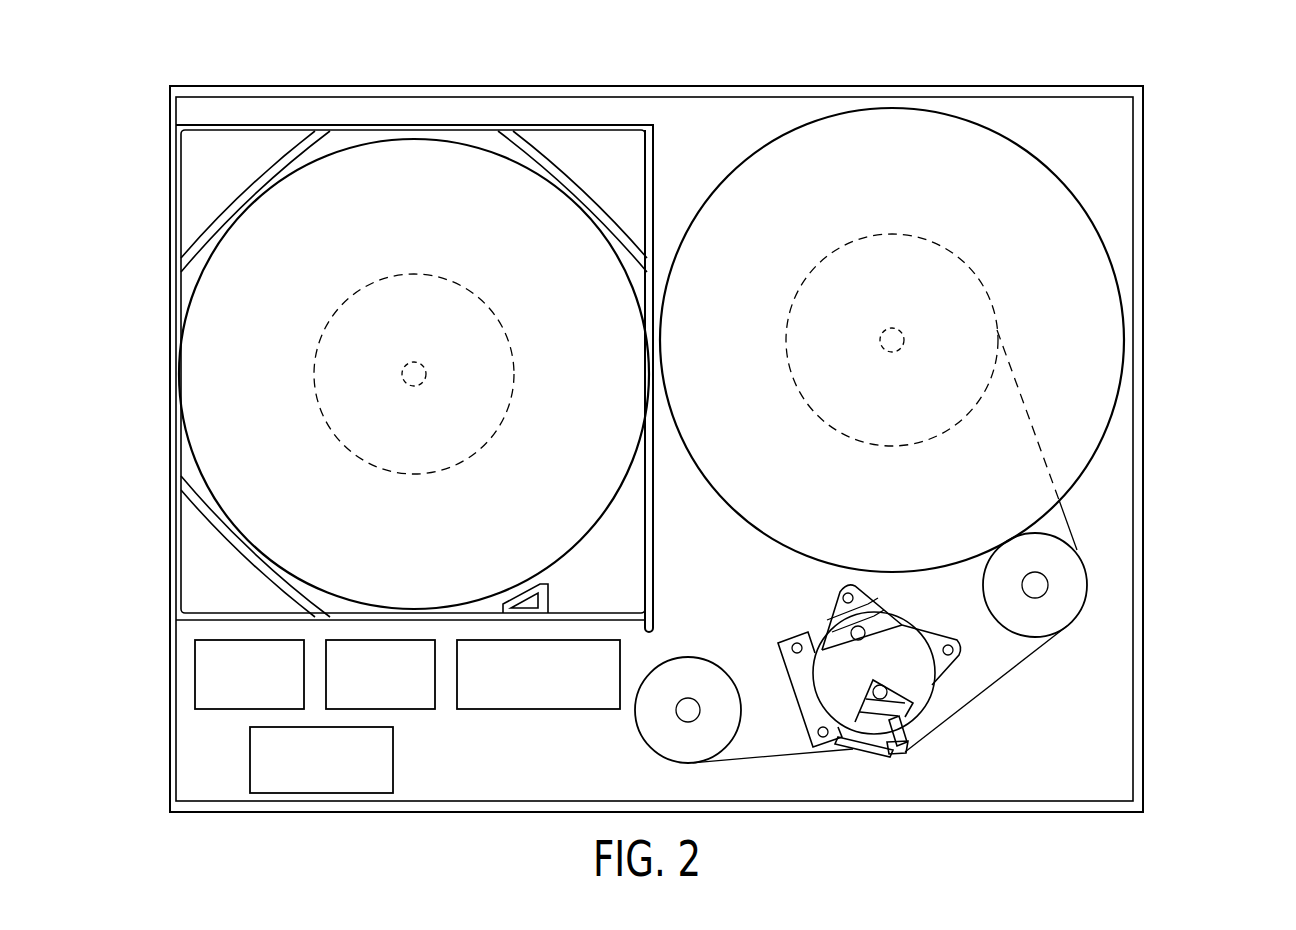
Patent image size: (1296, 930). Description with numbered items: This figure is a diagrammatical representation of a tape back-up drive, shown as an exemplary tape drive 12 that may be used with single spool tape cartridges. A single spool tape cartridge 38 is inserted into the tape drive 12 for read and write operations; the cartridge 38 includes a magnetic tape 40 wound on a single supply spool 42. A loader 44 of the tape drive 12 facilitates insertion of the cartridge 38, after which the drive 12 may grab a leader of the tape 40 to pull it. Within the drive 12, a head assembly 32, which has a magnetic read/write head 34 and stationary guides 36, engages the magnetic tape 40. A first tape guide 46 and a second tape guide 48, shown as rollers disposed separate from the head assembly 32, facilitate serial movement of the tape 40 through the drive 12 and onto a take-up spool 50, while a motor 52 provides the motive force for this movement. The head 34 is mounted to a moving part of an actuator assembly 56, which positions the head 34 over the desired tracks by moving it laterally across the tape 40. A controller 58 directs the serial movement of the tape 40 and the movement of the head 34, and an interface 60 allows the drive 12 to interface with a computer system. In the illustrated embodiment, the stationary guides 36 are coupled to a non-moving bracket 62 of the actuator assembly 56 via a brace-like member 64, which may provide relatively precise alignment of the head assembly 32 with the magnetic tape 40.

The tape drive 12 is at (1165, 571).
The head assembly 32 is at (902, 750).
The magnetic read/write head 34 is at (928, 774).
The guides 36 is at (928, 774).
The single spool tape cartridge 38 is at (657, 137).
The magnetic tape 40 is at (983, 690).
The supply spool 42 is at (565, 555).
The loader 44 is at (403, 709).
The first tape guide 46 is at (660, 733).
The second tape guide 48 is at (1070, 605).
The take-up spool 50 is at (735, 522).
The motor 52 is at (210, 677).
The actuator assembly 56 is at (808, 612).
The controller 58 is at (490, 709).
The interface 60 is at (347, 793).
The bracket 62 is at (797, 672).
The member 64 is at (858, 745).